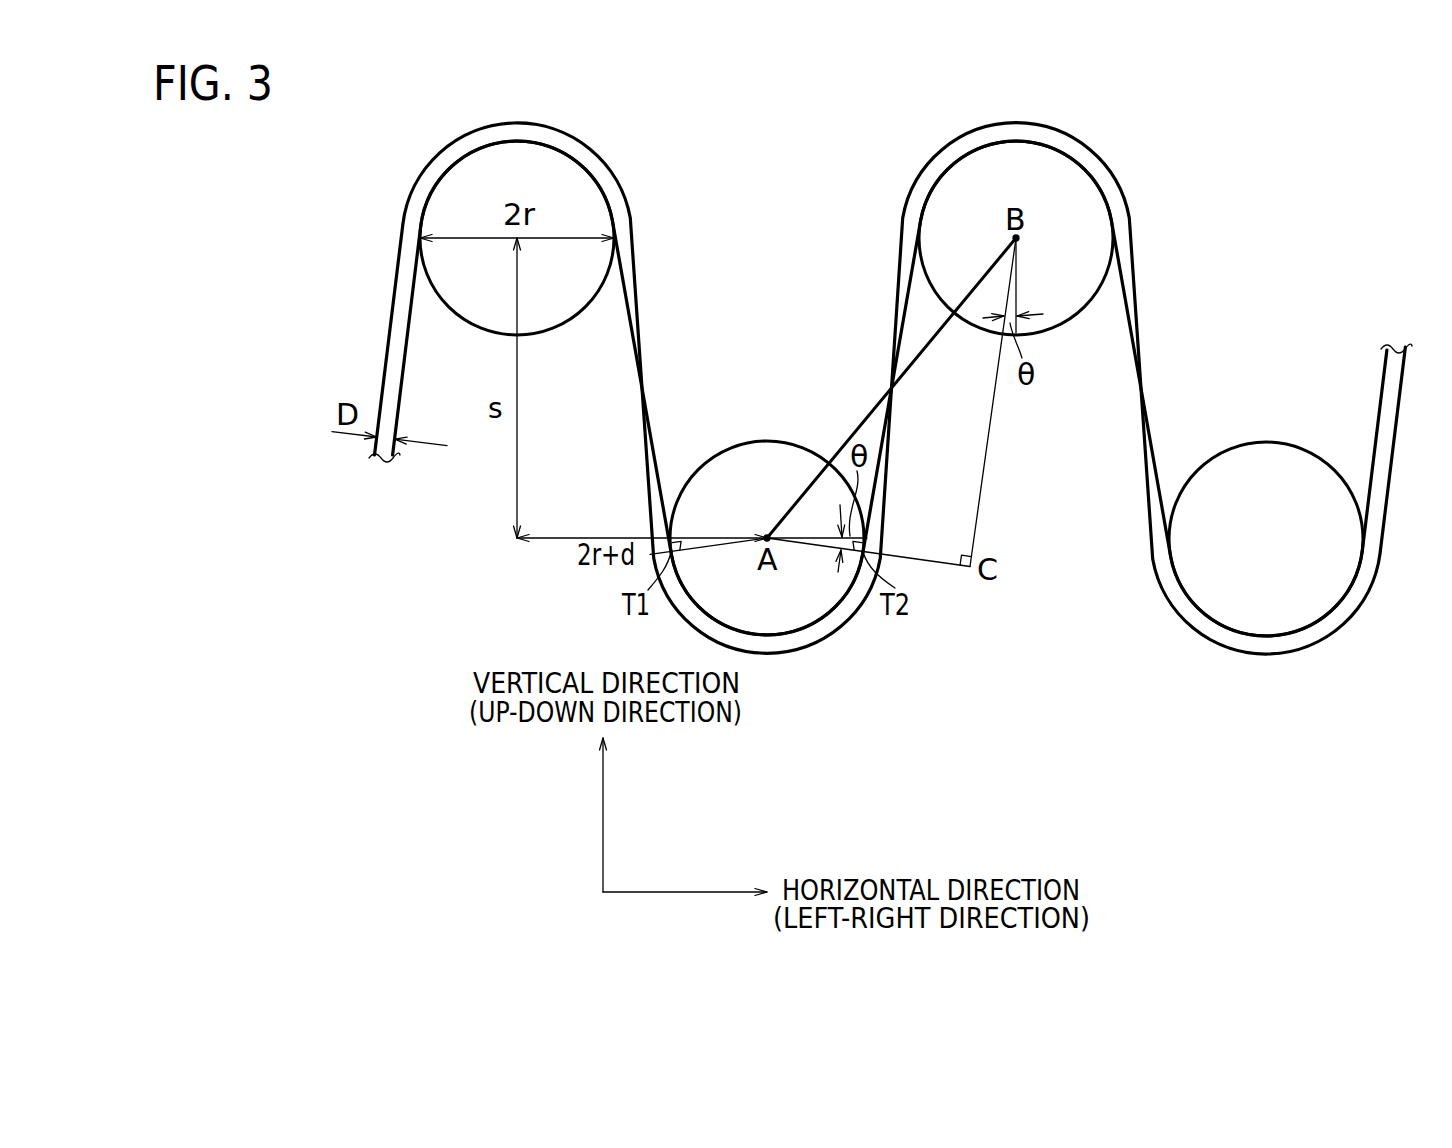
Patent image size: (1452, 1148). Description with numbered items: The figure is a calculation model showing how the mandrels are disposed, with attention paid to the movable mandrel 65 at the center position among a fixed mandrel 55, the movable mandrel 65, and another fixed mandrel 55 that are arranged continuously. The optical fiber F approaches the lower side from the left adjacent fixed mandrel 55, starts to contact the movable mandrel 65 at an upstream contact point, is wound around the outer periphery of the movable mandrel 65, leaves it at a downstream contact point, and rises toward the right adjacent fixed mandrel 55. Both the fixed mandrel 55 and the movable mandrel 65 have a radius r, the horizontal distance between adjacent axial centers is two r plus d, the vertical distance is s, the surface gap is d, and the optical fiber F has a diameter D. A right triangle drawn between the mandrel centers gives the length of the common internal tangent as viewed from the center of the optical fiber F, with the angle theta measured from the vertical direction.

The fixed mandrel 55 is at (518, 170).
The movable mandrel 65 is at (771, 453).
The optical fiber F is at (395, 333).